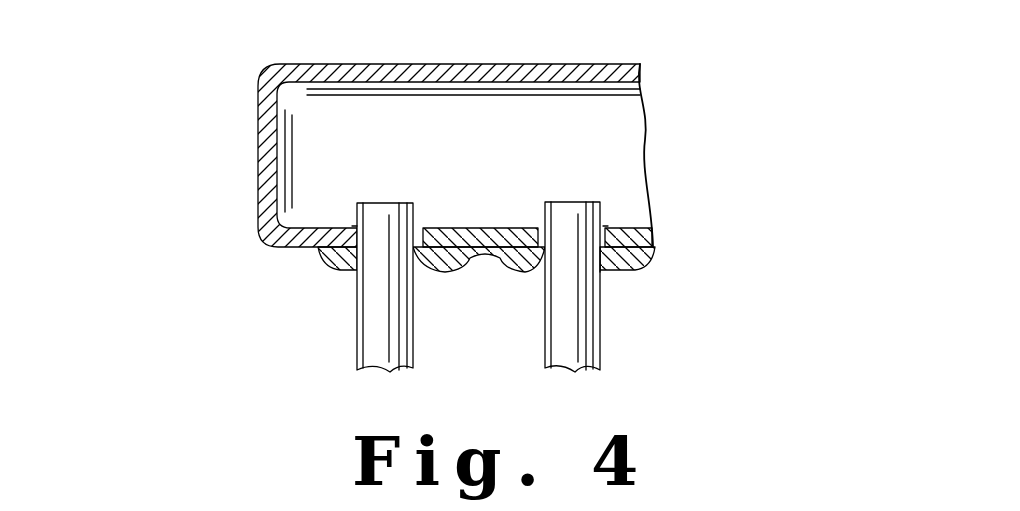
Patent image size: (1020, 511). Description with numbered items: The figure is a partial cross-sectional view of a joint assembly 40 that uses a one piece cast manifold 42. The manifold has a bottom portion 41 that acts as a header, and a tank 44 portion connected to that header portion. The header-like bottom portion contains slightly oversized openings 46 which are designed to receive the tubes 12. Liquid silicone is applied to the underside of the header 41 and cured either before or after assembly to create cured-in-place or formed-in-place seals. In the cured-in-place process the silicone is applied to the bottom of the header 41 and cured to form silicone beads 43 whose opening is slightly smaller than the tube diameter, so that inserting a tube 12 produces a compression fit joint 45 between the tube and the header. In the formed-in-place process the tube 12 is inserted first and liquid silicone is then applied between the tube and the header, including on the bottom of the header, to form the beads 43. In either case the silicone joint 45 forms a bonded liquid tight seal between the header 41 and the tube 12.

The joint assembly 40 is at (231, 48).
The bottom portion 41 is at (642, 238).
The one piece cast manifold 42 is at (263, 236).
The silicone beads 43 is at (343, 272).
The tank 44 is at (582, 122).
The silicone joint 45 is at (601, 273).
The oversized openings 46 is at (353, 229).
The tube 12 is at (370, 333).